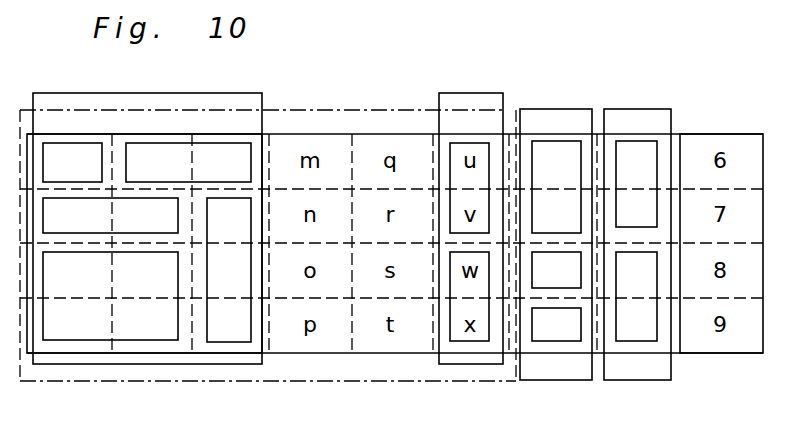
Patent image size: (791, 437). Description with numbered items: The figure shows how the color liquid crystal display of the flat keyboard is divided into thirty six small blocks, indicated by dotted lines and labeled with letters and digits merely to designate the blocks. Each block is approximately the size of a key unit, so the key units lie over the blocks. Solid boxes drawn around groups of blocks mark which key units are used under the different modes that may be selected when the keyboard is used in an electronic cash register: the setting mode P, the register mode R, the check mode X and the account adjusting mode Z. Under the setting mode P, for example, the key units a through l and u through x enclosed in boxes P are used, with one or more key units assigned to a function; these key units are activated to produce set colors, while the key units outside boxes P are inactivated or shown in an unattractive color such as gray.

The setting mode P is at (261, 90).
The register mode R is at (171, 383).
The check mode X is at (560, 383).
The account adjusting mode Z is at (643, 383).